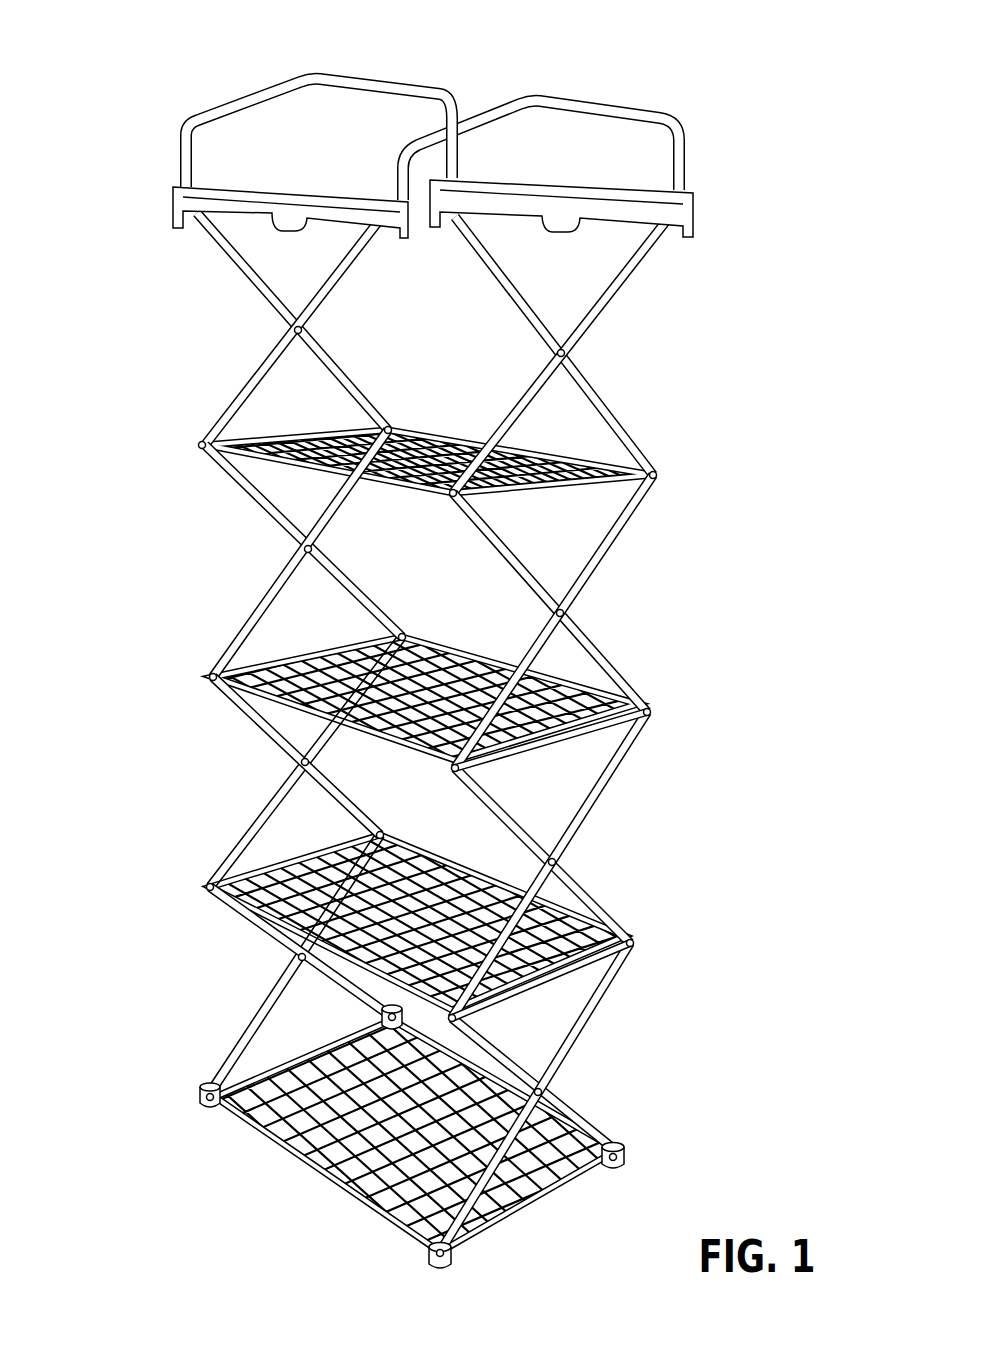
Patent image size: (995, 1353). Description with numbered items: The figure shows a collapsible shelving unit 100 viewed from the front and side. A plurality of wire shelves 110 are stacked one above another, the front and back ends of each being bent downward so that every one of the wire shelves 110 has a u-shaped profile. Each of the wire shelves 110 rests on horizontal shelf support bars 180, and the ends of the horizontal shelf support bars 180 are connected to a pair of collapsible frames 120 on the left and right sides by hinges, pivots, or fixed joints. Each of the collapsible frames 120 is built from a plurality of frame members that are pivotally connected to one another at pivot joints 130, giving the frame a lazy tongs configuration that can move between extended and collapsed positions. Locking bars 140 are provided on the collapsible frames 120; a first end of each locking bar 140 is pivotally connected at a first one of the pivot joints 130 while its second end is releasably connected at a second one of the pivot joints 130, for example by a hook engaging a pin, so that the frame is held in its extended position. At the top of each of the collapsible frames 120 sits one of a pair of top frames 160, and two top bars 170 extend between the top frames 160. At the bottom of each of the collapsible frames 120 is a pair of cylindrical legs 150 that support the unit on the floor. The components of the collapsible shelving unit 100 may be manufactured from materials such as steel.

The collapsible shelving unit 100 is at (127, 132).
The wire shelves 110 is at (432, 442).
The collapsible frames 120 is at (636, 262).
The pivot joints 130 is at (292, 324).
The locking bars 140 is at (598, 730).
The cylindrical legs 150 is at (200, 1093).
The top frames 160 is at (300, 200).
The top bars 170 is at (268, 95).
The horizontal shelf support bars 180 is at (420, 490).